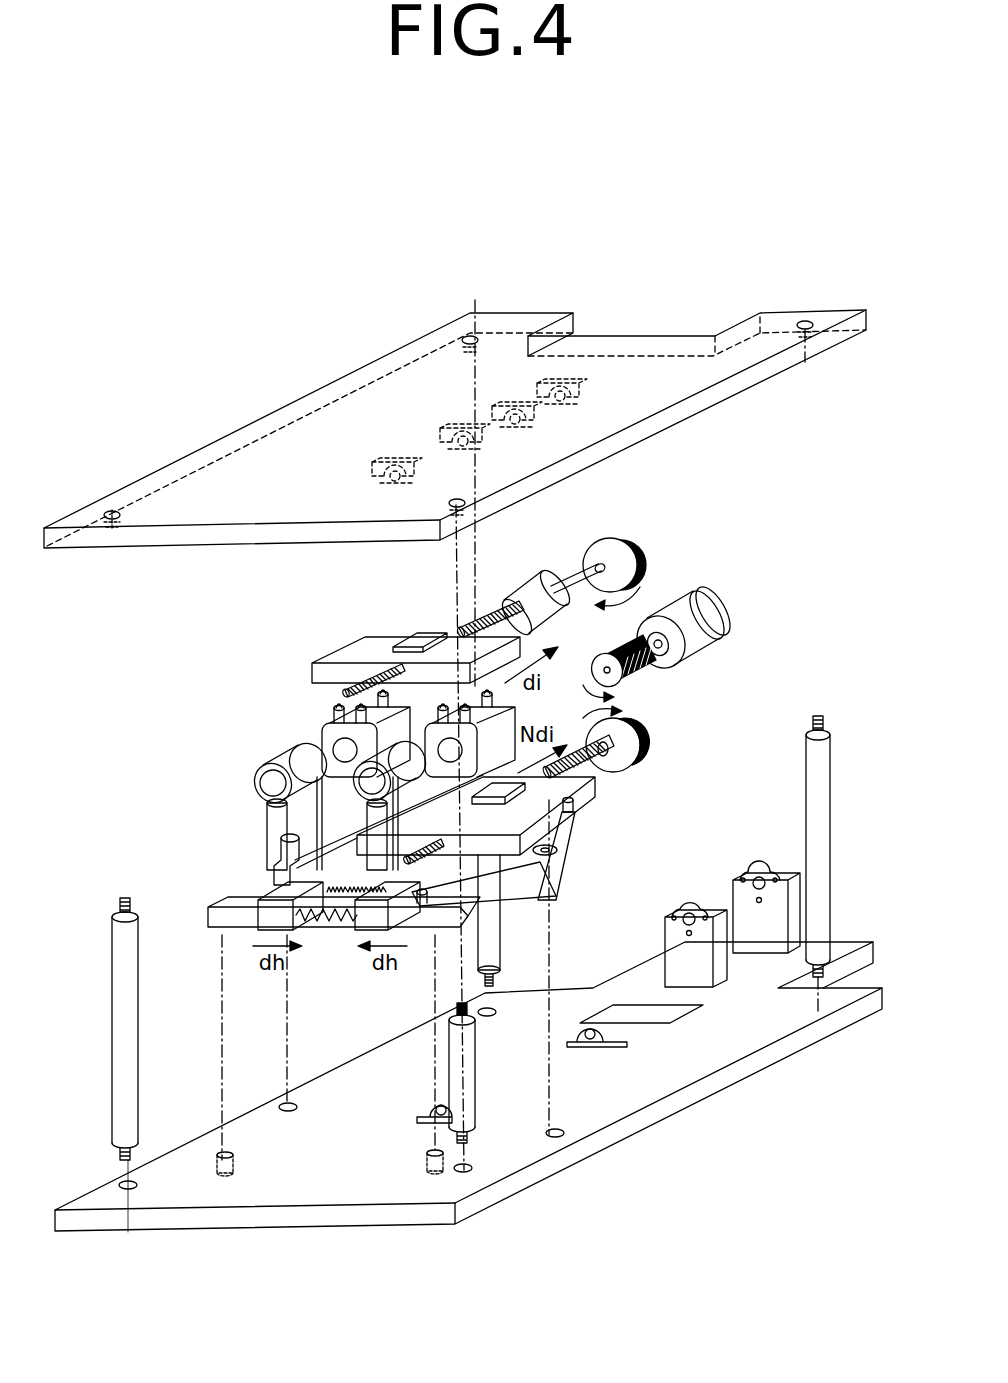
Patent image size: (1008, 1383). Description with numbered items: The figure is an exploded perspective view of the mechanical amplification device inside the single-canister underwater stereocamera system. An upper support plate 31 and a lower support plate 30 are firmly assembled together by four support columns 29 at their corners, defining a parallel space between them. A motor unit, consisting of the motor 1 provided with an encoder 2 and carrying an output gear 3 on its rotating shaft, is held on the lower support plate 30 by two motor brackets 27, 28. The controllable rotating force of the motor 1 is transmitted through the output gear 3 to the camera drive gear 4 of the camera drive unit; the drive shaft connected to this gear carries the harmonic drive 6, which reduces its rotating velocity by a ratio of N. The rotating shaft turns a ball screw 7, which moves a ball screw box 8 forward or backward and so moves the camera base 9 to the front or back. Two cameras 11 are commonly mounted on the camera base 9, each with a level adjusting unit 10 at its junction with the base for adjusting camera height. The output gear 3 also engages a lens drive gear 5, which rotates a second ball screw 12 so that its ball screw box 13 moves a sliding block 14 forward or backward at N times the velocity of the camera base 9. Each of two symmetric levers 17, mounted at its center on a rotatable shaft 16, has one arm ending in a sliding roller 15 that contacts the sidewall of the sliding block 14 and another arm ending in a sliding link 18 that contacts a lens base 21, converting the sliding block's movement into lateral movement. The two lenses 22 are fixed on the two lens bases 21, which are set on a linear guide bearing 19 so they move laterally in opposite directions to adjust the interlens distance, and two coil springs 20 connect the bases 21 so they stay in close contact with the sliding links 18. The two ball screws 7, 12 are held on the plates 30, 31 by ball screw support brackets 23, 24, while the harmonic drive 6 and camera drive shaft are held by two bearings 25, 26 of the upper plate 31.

The motor 1 is at (700, 640).
The encoder 2 is at (724, 610).
The output gear 3 is at (644, 661).
The camera drive gear 4 is at (634, 548).
The lens drive gear 5 is at (641, 745).
The harmonic drive 6 is at (520, 606).
The ball screw 7 is at (465, 622).
The ball screw box 8 is at (402, 635).
The camera base 9 is at (342, 662).
The level adjusting unit 10 is at (335, 700).
The camera 11 is at (325, 740).
The ball screw 12 is at (614, 766).
The ball screw box 13 is at (525, 793).
The sliding block 14 is at (590, 782).
The sliding roller 15 is at (575, 806).
The rotatable shaft 16 is at (560, 886).
The lever 17 is at (510, 888).
The sliding link 18 is at (480, 920).
The linear guide bearing 19 is at (228, 917).
The coil spring 20 is at (330, 925).
The lens base 21 is at (262, 897).
The lens 22 is at (363, 780).
The ball screw support bracket 23 is at (622, 1045).
The ball screw support bracket 24 is at (426, 469).
The bearing 25 is at (540, 418).
The bearing 26 is at (583, 397).
The motor bracket 27 is at (710, 975).
The motor bracket 28 is at (790, 897).
The support column 29 is at (830, 776).
The lower support plate 30 is at (330, 1195).
The upper support plate 31 is at (262, 505).